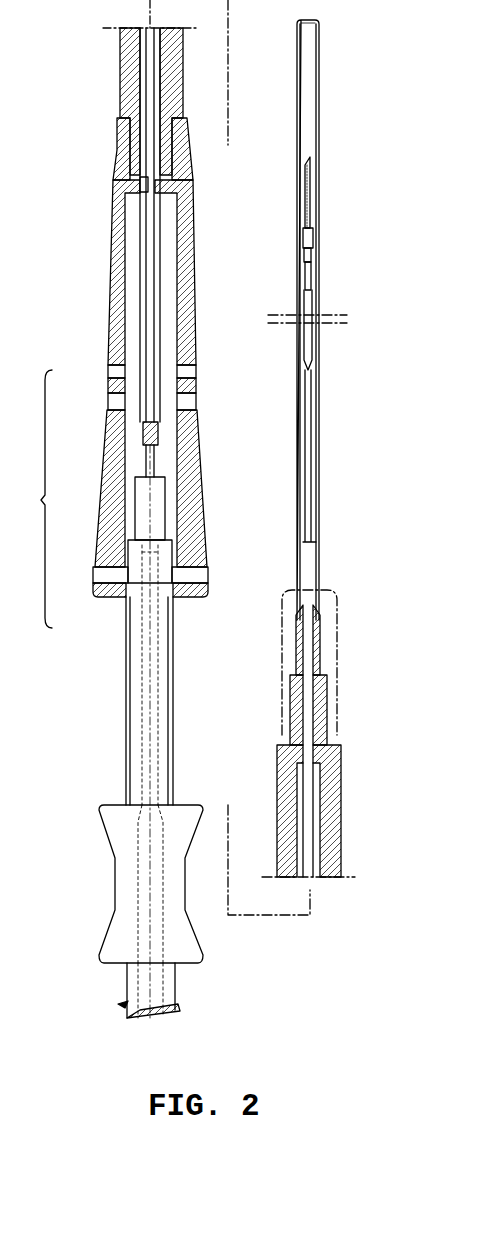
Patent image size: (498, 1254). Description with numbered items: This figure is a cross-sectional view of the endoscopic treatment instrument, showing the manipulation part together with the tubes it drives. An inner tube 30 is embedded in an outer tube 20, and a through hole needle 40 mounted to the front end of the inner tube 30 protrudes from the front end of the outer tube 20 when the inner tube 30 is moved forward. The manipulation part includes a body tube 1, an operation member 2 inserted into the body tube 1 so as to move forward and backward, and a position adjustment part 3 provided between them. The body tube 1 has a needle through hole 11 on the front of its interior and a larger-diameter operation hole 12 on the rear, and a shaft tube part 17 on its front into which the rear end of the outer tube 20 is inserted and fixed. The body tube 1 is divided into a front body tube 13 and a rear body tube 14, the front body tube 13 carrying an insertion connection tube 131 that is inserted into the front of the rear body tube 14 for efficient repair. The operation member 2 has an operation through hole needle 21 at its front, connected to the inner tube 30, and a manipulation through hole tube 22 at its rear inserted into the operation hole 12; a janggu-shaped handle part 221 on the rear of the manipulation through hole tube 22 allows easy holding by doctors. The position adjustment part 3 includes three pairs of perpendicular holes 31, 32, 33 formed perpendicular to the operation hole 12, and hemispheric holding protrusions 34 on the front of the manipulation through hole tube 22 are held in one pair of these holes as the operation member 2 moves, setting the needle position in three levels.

The body tube 1 is at (200, 303).
The operation member 2 is at (118, 697).
The position adjustment part 3 is at (38, 499).
The needle through hole 11 is at (145, 192).
The operation hole 12 is at (128, 262).
The front body tube 13 is at (130, 62).
The rear body tube 14 is at (196, 468).
The shaft tube part 17 is at (318, 630).
The outer tube 20 is at (297, 197).
The operation through hole needle 21 is at (148, 310).
The manipulation through hole tube 22 is at (138, 755).
The inner tube 30 is at (315, 303).
The perpendicular hole 31 is at (116, 372).
The perpendicular hole 32 is at (100, 576).
The perpendicular hole 33 is at (116, 402).
The holding protrusion 34 is at (125, 594).
The through hole needle 40 is at (312, 210).
The insertion connection tube 131 is at (125, 130).
The handle part 221 is at (125, 886).